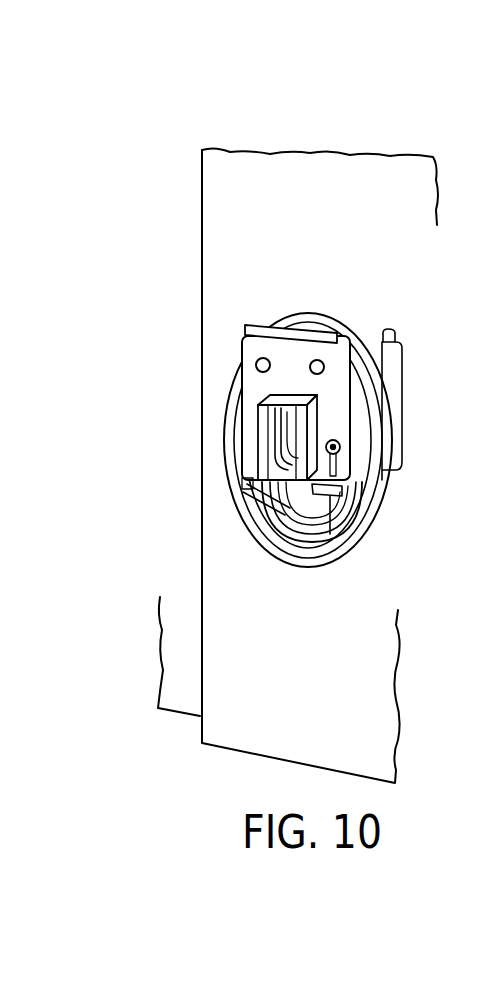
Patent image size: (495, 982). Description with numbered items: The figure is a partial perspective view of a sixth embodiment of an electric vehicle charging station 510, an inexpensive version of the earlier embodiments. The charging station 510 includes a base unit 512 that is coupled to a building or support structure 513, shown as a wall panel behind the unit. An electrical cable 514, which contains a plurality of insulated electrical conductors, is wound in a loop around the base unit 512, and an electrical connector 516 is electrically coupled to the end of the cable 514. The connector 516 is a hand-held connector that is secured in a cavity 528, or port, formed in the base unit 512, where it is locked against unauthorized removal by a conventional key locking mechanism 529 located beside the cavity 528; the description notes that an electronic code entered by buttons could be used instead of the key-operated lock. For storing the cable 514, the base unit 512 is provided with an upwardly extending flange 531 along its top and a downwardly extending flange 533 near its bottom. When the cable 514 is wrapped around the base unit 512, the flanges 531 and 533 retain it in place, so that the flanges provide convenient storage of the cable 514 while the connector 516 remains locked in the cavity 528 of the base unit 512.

The electric vehicle charging station 510 is at (352, 296).
The base unit 512 is at (249, 364).
The building or support structure 513 is at (318, 152).
The electrical cable 514 is at (312, 567).
The electrical connector 516 is at (300, 420).
The cavity 528 is at (276, 456).
The key locking mechanism 529 is at (346, 456).
The upwardly extending flange 531 is at (247, 323).
The downwardly extending flange 533 is at (330, 498).